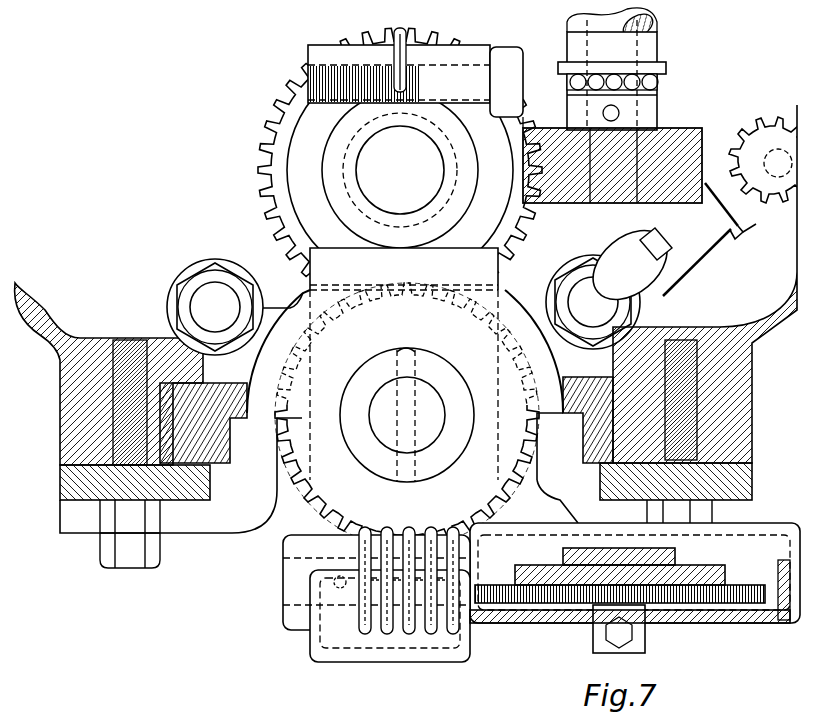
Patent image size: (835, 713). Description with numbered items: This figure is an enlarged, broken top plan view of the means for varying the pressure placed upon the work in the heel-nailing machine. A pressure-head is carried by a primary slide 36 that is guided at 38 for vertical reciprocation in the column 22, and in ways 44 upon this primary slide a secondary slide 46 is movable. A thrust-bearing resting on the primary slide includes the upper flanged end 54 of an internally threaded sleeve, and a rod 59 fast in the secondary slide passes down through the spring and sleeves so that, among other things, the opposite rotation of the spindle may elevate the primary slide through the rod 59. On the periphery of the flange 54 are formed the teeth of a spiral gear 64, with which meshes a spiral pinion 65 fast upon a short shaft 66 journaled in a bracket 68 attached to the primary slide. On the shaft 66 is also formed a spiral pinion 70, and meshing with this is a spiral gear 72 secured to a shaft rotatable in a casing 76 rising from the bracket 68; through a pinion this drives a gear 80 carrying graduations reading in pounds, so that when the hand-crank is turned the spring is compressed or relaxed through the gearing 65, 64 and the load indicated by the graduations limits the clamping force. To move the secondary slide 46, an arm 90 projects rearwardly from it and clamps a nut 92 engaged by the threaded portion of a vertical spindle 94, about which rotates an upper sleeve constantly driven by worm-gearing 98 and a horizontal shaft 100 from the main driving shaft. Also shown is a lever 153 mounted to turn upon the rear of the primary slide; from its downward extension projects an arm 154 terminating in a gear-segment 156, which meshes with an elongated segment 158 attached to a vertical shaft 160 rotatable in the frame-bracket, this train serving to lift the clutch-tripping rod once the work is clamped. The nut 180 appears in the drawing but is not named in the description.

The column 22 is at (55, 333).
The primary slide 36 is at (222, 380).
The guides 38 is at (222, 456).
The ways 44 is at (240, 456).
The secondary slide 46 is at (305, 300).
The upper flanged end 54 is at (462, 505).
The rod 59 is at (445, 420).
The spiral gear 64 is at (338, 520).
The spiral pinion 65 is at (362, 525).
The short shaft 66 is at (752, 470).
The bracket 68 is at (780, 622).
The spiral pinion 70 is at (583, 550).
The spiral gear 72 is at (727, 568).
The casing 76 is at (680, 624).
The gear 80 is at (578, 607).
The arm 90 is at (313, 128).
The nut 92 is at (335, 163).
The vertical spindle 94 is at (368, 172).
The worm-gearing 98 is at (548, 117).
The horizontal shaft 100 is at (636, 30).
The lever 153 is at (655, 278).
The arm 154 is at (700, 250).
The gear-segment 156 is at (748, 227).
The elongated segment 158 is at (770, 110).
The vertical shaft 160 is at (752, 142).
The nut 180 is at (212, 300).